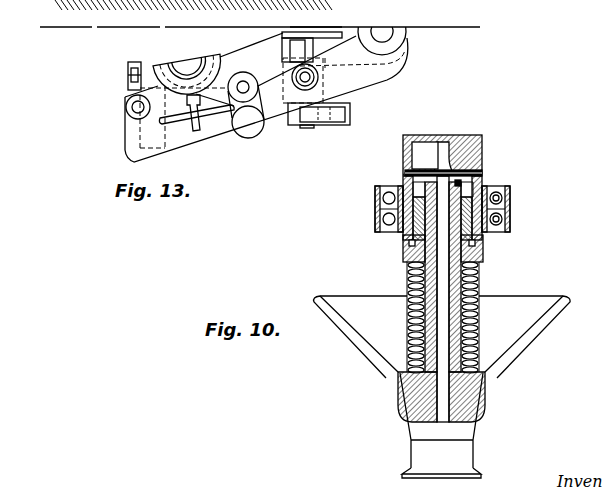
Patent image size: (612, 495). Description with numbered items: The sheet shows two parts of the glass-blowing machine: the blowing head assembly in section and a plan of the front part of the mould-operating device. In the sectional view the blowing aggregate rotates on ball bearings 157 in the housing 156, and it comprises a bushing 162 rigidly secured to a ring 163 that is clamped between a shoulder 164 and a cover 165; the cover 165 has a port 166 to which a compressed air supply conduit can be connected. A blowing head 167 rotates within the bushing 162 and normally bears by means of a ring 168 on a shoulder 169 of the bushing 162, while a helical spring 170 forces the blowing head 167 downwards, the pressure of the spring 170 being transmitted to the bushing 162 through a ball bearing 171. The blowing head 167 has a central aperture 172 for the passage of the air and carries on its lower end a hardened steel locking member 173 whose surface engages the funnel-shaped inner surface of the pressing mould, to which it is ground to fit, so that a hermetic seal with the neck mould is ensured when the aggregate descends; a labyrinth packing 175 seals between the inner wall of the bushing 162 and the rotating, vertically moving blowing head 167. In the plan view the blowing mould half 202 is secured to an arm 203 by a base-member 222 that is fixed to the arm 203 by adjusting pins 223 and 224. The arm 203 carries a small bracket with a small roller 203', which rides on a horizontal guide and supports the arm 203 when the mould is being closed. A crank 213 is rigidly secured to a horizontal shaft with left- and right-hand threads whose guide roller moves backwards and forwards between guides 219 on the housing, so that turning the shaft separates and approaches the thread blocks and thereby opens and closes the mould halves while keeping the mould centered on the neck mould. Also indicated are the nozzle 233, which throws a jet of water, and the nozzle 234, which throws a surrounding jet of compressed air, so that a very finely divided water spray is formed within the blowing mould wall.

In FIG. 13, the guides 219 is at (289, 28).
In FIG. 13, the small rollers 203' is at (130, 64).
In FIG. 13, the mould half 202 is at (221, 58).
In FIG. 13, the adjusting pin 224 is at (243, 87).
In FIG. 13, the base-member 222 is at (152, 88).
In FIG. 13, the adjusting pin 223 is at (136, 106).
In FIG. 13, the nozzle 233 is at (195, 113).
In FIG. 13, the nozzle 234 is at (205, 100).
In FIG. 13, the arm 203 is at (307, 101).
In FIG. 13, the crank 213 is at (341, 126).
In FIG. 10, the ring 168 is at (457, 183).
In FIG. 10, the port 166 is at (413, 153).
In FIG. 10, the cover 165 is at (407, 171).
In FIG. 10, the ball bearings 157 is at (493, 191).
In FIG. 10, the housing 156 is at (510, 192).
In FIG. 10, the ring 163 is at (380, 211).
In FIG. 10, the shoulder 169 is at (511, 208).
In FIG. 10, the shoulder 164 is at (403, 238).
In FIG. 10, the bushing 162 is at (485, 236).
In FIG. 10, the ball bearing 171 is at (486, 252).
In FIG. 10, the helical spring 170 is at (472, 272).
In FIG. 10, the central aperture 172 is at (449, 284).
In FIG. 10, the labyrinth packing 175 is at (420, 272).
In FIG. 10, the blowing head 167 is at (470, 318).
In FIG. 10, the locking member 173 is at (463, 393).